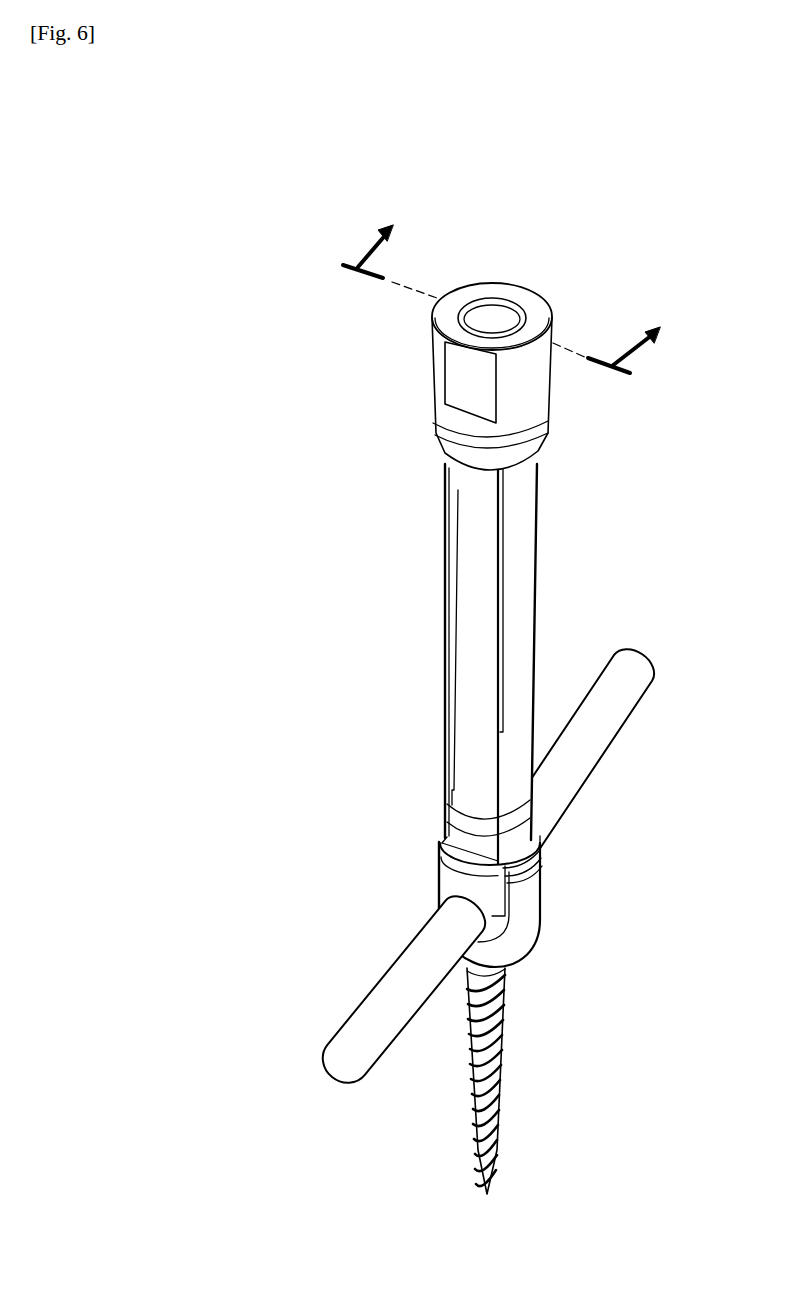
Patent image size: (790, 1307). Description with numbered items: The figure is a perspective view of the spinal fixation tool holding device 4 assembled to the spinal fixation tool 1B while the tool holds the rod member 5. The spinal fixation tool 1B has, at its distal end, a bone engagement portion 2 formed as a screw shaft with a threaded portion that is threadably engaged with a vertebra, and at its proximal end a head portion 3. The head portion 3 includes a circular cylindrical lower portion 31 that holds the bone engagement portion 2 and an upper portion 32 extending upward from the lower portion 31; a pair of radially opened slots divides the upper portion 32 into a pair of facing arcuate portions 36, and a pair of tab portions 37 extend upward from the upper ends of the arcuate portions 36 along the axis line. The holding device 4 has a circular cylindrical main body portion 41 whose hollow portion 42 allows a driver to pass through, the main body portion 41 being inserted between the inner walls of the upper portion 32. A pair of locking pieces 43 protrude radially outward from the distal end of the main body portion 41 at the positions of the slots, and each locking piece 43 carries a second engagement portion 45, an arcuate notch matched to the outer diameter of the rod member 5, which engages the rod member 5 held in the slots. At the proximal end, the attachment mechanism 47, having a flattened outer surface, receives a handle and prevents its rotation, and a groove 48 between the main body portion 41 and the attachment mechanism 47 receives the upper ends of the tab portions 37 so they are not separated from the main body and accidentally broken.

The spinal fixation tool 1B is at (298, 716).
The bone engagement portion 2 is at (505, 1058).
The head portion 3 is at (622, 866).
The lower portion 31 is at (537, 946).
The upper portion 32 is at (548, 855).
The arcuate portions 36 is at (433, 900).
The tab portions 37 is at (525, 598).
The spinal fixation tool holding device 4 is at (404, 347).
The main body portion 41 is at (467, 556).
The hollow portion 42 is at (492, 322).
The locking pieces 43 is at (452, 878).
The second engagement portion 45 is at (475, 892).
The attachment mechanism 47 is at (437, 362).
The groove 48 is at (540, 456).
The rod member 5 is at (605, 738).